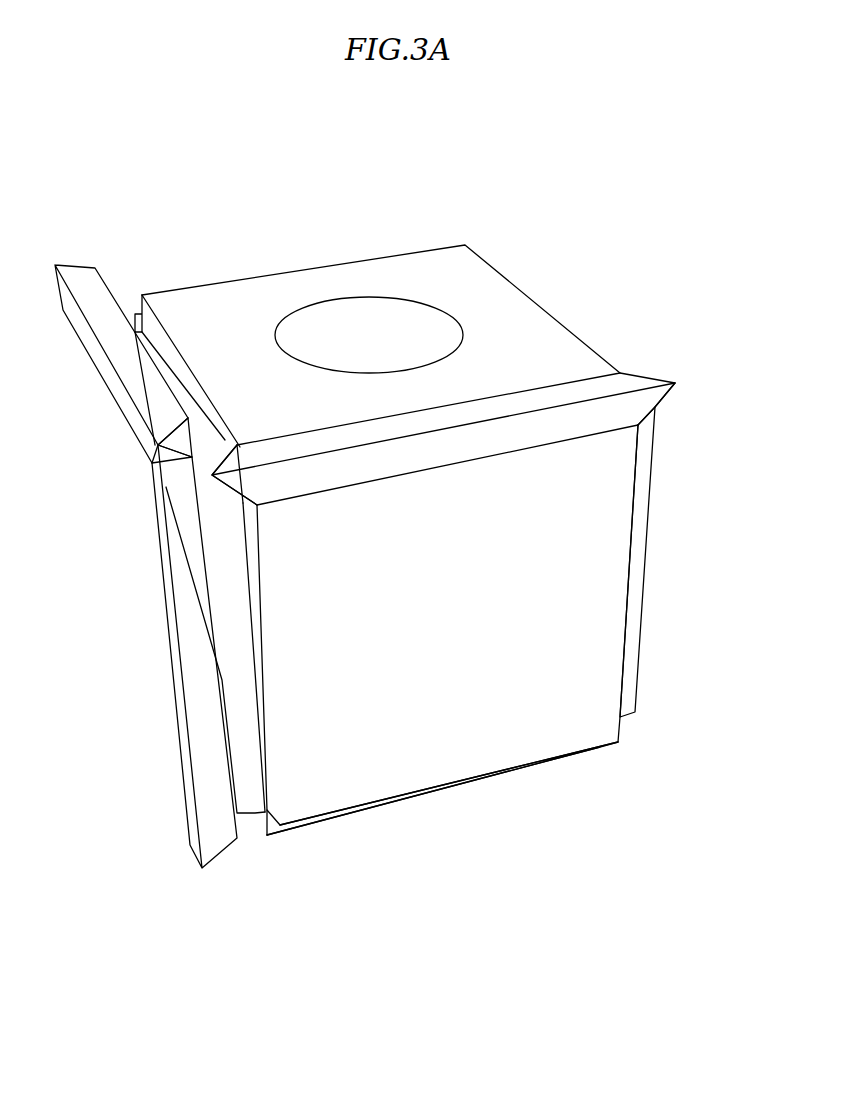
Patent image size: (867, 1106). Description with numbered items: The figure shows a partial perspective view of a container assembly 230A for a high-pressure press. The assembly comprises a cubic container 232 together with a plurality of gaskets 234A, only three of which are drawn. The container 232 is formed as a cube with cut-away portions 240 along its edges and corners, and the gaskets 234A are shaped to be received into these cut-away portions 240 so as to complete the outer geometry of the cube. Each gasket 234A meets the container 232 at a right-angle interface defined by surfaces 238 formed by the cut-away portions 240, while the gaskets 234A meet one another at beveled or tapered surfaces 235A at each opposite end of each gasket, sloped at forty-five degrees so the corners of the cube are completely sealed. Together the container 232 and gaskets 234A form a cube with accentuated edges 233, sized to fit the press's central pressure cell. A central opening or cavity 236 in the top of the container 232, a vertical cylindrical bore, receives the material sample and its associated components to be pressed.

The container assembly 230A is at (153, 198).
The cubic container 232 is at (425, 767).
The accentuated edges 233 is at (478, 420).
The gaskets 234A is at (84, 333).
The beveled or tapered surfaces 235A is at (194, 490).
The central opening or cavity 236 is at (384, 345).
The surfaces 238 is at (150, 303).
The cut-away portions 240 is at (184, 365).